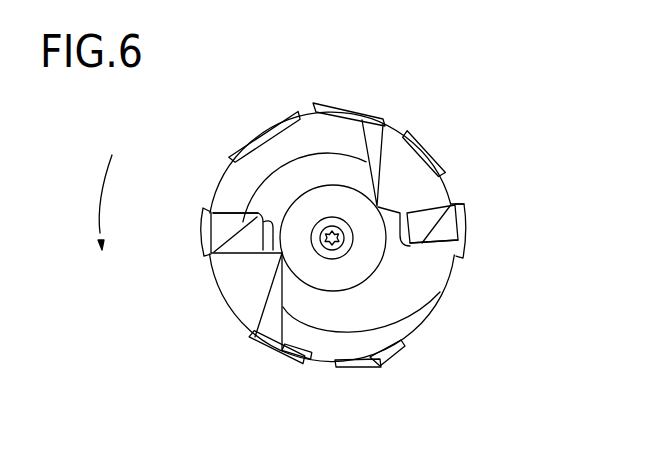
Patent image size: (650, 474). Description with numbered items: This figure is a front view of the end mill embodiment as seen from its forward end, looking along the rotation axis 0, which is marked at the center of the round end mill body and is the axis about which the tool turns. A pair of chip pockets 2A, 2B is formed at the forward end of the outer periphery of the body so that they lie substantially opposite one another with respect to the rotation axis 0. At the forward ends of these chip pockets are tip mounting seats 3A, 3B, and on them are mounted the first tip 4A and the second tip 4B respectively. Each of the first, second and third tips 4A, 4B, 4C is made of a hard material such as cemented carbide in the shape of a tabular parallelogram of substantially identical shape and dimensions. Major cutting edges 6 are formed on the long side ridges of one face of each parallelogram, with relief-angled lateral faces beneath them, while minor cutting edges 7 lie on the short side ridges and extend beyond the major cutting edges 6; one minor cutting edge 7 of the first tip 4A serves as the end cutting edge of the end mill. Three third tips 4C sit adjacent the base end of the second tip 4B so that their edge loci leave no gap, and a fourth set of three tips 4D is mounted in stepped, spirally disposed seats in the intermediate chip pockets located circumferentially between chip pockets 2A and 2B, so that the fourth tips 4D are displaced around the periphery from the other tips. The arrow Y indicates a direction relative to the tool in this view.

The rotation axis 0 is at (347, 250).
The chip pocket 2A is at (440, 137).
The chip pocket 2B is at (247, 287).
The tip mounting seat 3A is at (437, 250).
The tip mounting seat 3B is at (233, 200).
The first tip 4A is at (460, 227).
The second tip 4B is at (212, 207).
The third tip 4C is at (417, 127).
The fourth tip 4D is at (197, 290).
The major cutting edge 6 is at (200, 230).
The minor cutting edge 7 is at (455, 196).
The feed direction Y is at (435, 72).